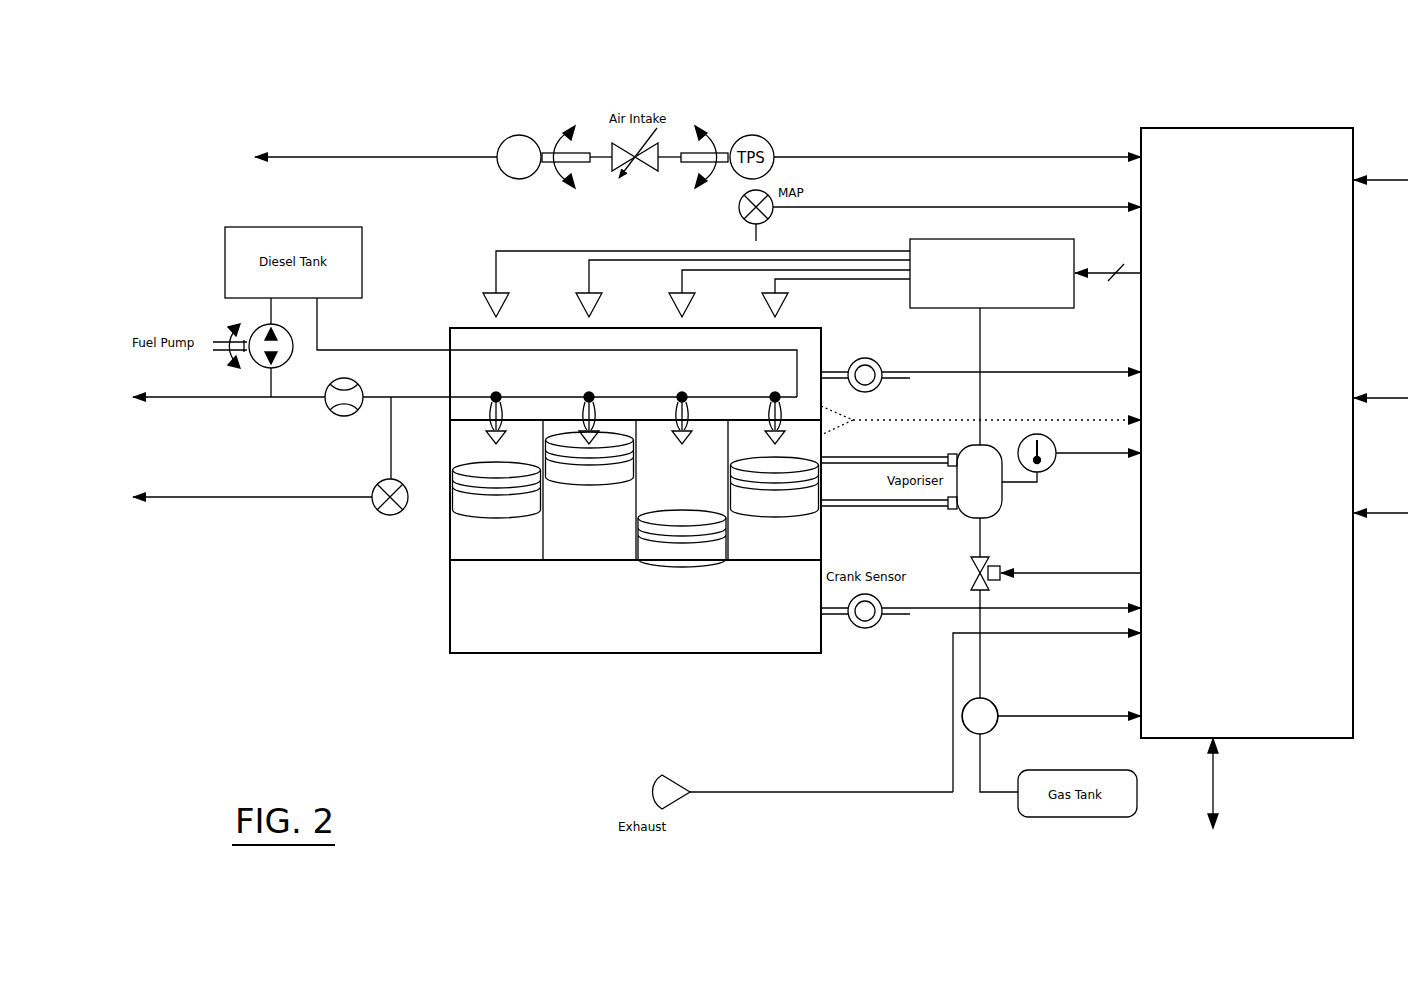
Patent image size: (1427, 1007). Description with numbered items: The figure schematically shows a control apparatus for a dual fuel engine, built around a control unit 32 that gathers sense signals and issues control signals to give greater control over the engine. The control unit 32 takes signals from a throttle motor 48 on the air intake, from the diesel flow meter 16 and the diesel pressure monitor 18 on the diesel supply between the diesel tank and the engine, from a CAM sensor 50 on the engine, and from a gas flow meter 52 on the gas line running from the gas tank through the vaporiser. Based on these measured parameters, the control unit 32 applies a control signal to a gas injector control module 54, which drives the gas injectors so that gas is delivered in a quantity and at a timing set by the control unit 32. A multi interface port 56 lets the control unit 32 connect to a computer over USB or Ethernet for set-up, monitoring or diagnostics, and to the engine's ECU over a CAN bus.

The diesel flow meter 16 is at (328, 408).
The diesel pressure monitor 18 is at (376, 510).
The control unit 32 is at (1202, 137).
The throttle motor 48 is at (519, 135).
The CAM sensor 50 is at (863, 372).
The gas flow meter 52 is at (986, 705).
The gas injector control module 54 is at (1033, 293).
The multi interface port 56 is at (1213, 780).